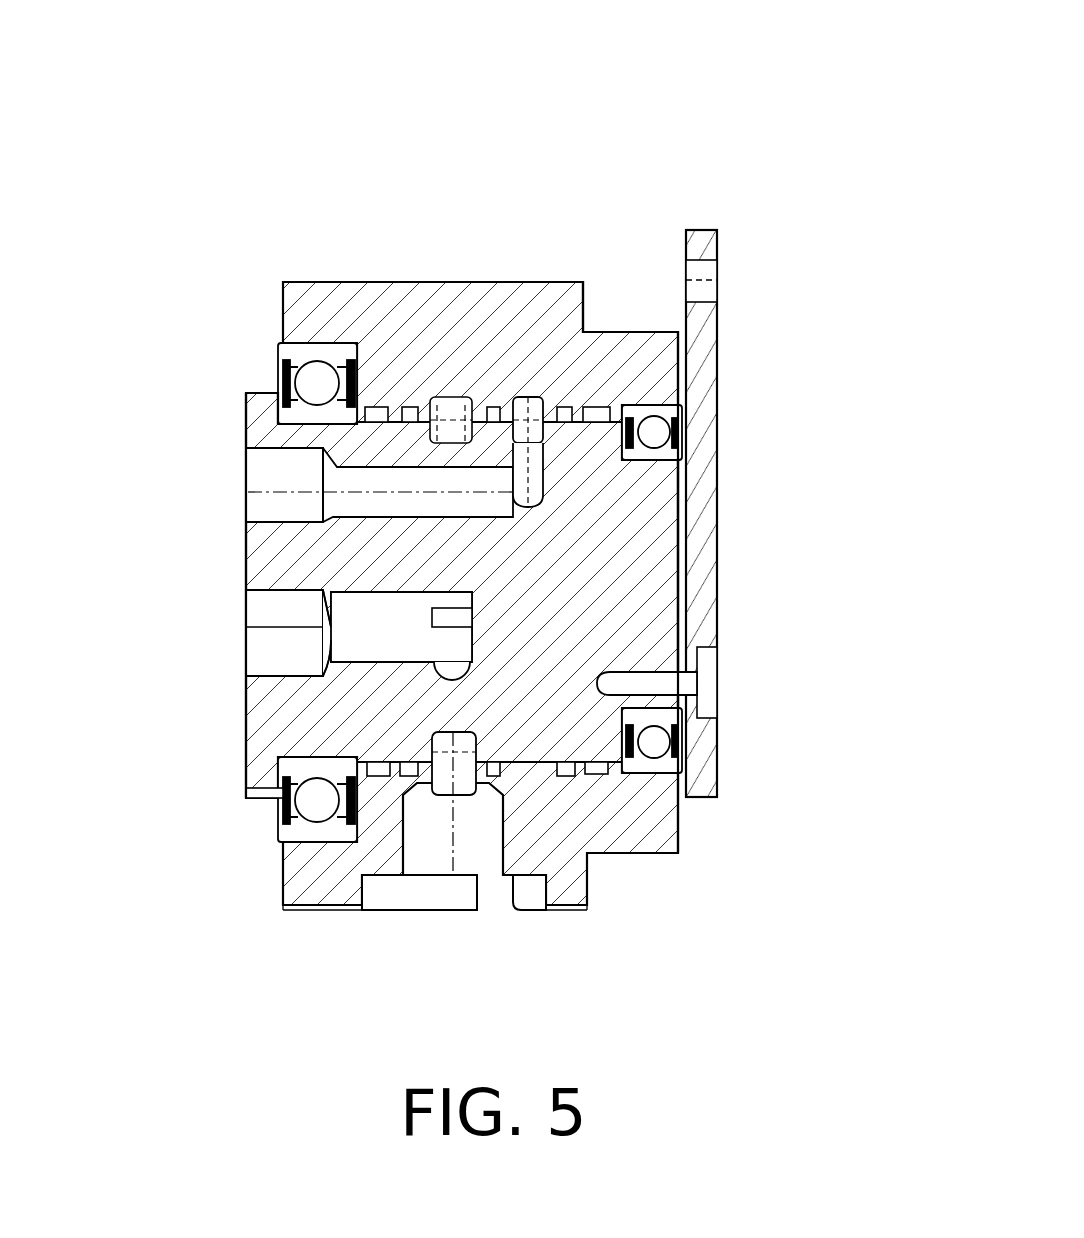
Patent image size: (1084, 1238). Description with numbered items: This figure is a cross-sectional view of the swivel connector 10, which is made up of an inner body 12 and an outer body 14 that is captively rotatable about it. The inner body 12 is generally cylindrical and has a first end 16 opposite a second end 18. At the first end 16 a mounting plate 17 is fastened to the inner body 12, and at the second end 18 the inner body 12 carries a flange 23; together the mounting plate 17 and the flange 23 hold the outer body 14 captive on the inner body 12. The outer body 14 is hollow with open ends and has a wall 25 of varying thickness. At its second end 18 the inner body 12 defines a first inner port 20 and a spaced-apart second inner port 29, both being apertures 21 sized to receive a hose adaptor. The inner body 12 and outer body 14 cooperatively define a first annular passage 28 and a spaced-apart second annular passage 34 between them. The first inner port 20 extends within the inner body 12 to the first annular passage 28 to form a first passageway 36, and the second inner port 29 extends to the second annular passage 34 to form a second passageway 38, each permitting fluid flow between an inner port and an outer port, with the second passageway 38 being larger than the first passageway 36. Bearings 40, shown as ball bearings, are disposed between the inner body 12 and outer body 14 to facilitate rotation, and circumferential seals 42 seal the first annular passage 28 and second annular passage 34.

The swivel connector 10 is at (811, 182).
The inner body 12 is at (548, 563).
The outer body 14 is at (558, 352).
The first end 16 is at (681, 558).
The mounting plate 17 is at (693, 600).
The second end 18 is at (256, 553).
The first inner port 20 is at (277, 484).
The apertures 21 is at (250, 512).
The flange 23 is at (258, 400).
The wall 25 is at (458, 333).
The first annular passage 28 is at (528, 413).
The second inner port 29 is at (275, 643).
The second annular passage 34 is at (482, 760).
The first passageway 36 is at (365, 487).
The second passageway 38 is at (390, 633).
The bearings 40 is at (658, 430).
The circumferential seals 42 is at (568, 765).